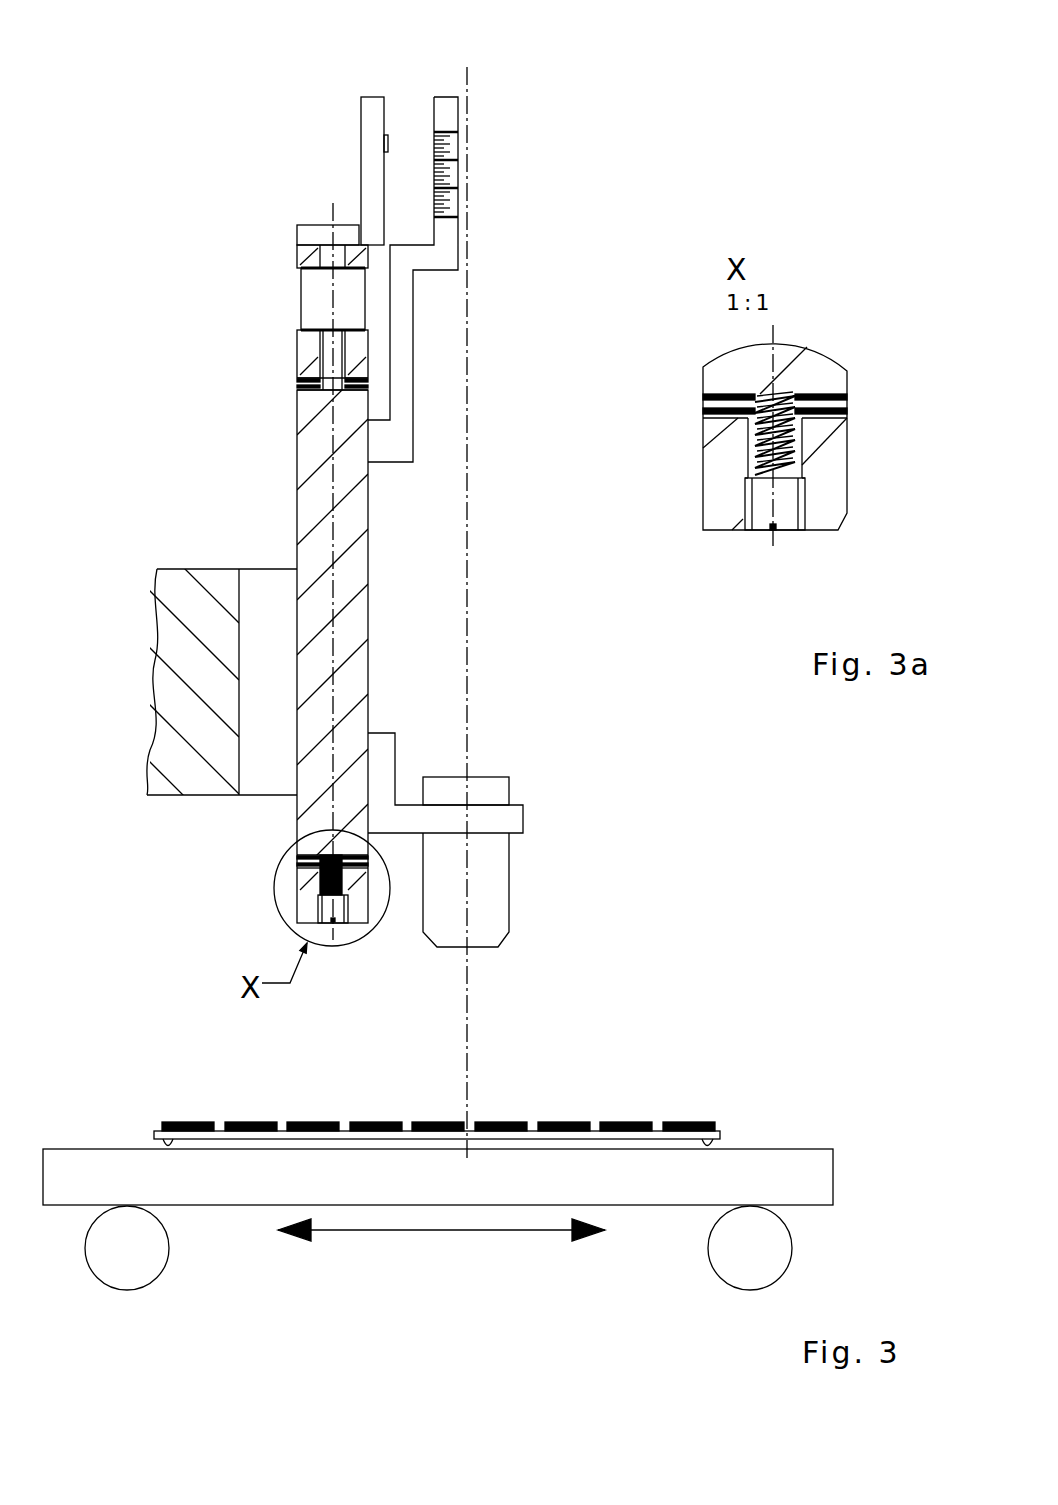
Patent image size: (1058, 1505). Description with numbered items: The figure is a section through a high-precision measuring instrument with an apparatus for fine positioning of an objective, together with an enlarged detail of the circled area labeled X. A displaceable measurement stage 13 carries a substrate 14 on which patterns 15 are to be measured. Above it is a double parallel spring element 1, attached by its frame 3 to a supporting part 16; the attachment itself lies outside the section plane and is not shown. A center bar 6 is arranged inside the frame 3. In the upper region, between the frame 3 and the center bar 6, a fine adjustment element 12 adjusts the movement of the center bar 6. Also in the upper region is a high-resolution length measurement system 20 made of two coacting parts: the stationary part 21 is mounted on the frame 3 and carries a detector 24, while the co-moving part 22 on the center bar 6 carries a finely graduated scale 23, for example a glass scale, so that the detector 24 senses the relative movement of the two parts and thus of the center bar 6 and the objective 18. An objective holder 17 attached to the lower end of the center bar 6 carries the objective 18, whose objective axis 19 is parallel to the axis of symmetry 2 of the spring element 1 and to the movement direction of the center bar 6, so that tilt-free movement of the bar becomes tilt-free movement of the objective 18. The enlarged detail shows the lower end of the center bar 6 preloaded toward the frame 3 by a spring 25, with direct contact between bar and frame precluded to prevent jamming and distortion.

In FIG. 3, the double parallel spring element 1 is at (297, 238).
In FIG. 3, the axis of symmetry 2 is at (333, 210).
In FIG. 3, the frame 3 is at (312, 253).
In FIG. 3A, the frame 3 is at (760, 483).
In FIG. 3, the center bar 6 is at (308, 455).
In FIG. 3A, the center bar 6 is at (799, 431).
In FIG. 3, the fine adjustment element 12 is at (323, 305).
In FIG. 3, the measurement stage 13 is at (795, 1170).
In FIG. 3, the substrate 14 is at (717, 1133).
In FIG. 3, the patterns 15 is at (683, 1122).
In FIG. 3, the supporting part 16 is at (187, 598).
In FIG. 3, the objective holder 17 is at (445, 766).
In FIG. 3, the objective 18 is at (483, 790).
In FIG. 3, the objective axis 19 is at (525, 614).
In FIG. 3, the high-resolution length measurement system 20 is at (392, 238).
In FIG. 3, the stationary part 21 is at (319, 162).
In FIG. 3, the co-moving part 22 is at (451, 271).
In FIG. 3, the finely graduated scale 23 is at (450, 128).
In FIG. 3, the detector 24 is at (383, 143).
In FIG. 3A, the spring 25 is at (834, 433).